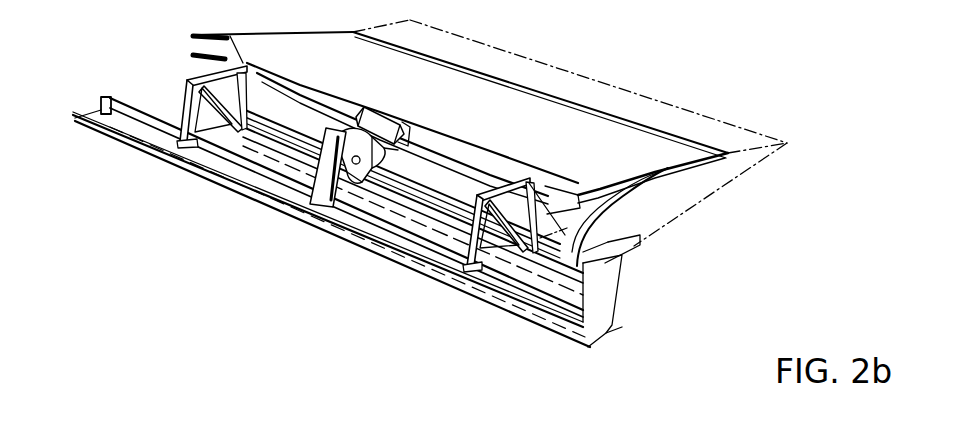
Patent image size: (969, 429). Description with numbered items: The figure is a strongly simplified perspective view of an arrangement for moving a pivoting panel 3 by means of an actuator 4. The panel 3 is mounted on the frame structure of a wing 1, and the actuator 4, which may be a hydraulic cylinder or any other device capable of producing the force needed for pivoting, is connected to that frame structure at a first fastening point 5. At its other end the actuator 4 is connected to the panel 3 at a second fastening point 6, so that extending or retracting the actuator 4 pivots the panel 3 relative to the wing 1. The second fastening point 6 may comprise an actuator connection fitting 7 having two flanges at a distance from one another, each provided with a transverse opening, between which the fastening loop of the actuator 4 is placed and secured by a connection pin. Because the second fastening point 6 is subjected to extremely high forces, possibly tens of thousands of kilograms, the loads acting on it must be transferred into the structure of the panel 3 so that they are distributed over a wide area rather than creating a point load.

The wing 1 is at (427, 299).
The pivoting panel 3 is at (573, 123).
The actuator 4 is at (376, 193).
The first fastening point 5 is at (307, 181).
The second fastening point 6 is at (397, 152).
The actuator connection fitting 7 is at (398, 116).